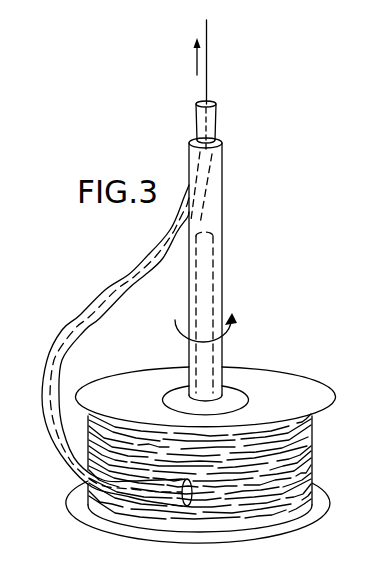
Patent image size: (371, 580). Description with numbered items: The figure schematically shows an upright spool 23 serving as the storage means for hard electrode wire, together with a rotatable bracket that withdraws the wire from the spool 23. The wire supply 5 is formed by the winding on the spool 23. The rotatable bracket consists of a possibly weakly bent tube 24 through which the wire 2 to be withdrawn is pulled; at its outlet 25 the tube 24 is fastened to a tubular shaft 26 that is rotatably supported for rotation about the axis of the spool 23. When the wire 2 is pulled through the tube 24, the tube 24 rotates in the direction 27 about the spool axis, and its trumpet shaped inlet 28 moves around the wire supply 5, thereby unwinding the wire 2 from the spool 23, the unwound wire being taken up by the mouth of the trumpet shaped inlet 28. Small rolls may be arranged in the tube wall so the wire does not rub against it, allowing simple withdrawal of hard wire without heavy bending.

The wire 2 is at (208, 50).
The wire supply 5 is at (308, 487).
The spool 23 is at (285, 390).
The tube 24 is at (105, 288).
The outlet 25 is at (217, 115).
The tubular shaft 26 is at (210, 218).
The direction 27 is at (233, 336).
The trumpet shaped inlet 28 is at (180, 478).